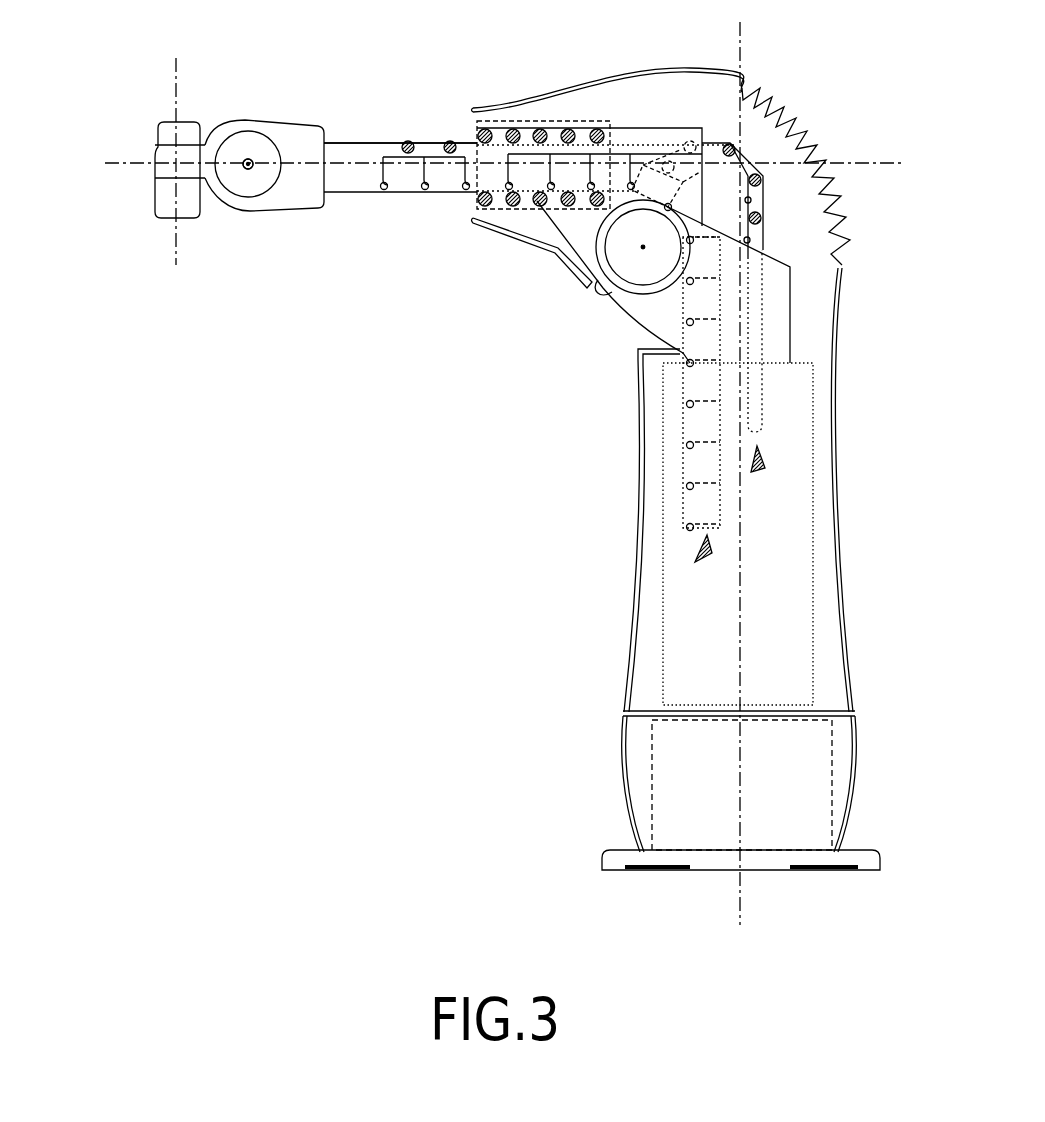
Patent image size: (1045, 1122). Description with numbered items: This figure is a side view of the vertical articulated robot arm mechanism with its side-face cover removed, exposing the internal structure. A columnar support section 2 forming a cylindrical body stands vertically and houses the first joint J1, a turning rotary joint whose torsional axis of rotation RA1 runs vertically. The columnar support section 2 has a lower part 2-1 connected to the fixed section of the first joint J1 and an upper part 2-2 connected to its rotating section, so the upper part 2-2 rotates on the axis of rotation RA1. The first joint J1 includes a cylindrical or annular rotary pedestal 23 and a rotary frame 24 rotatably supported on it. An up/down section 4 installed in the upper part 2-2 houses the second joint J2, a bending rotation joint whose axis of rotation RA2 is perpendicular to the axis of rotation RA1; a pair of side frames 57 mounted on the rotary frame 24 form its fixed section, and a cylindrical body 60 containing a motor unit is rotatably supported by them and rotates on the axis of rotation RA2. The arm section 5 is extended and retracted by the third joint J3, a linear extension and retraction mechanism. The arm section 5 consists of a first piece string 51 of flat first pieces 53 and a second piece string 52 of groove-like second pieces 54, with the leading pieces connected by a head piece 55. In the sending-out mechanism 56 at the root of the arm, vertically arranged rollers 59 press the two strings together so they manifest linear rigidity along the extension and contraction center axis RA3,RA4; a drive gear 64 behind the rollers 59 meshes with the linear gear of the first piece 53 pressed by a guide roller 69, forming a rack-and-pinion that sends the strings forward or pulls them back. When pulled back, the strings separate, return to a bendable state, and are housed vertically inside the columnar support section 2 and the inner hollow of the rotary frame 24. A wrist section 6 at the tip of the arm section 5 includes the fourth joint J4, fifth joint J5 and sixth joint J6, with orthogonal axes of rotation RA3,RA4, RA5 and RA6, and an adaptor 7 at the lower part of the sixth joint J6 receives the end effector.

The columnar support section 2 is at (853, 528).
The lower part 2-1 is at (627, 792).
The upper part 2-2 is at (635, 638).
The up/down section 4 is at (817, 122).
The arm section 5 is at (438, 137).
The wrist section 6 is at (267, 107).
The adaptor 7 is at (193, 214).
The rotary pedestal 23 is at (650, 722).
The rotary frame 24 is at (815, 620).
The first piece string 51 is at (760, 462).
The second piece string 52 is at (690, 560).
The first piece 53 is at (758, 412).
The second piece 54 is at (685, 500).
The head piece 55 is at (348, 195).
The sending-out mechanism 56 is at (547, 253).
The side frame 57 is at (636, 313).
The rollers 59 is at (492, 124).
The cylindrical body 60 is at (615, 291).
The drive gear 64 is at (663, 165).
The guide roller 69 is at (688, 150).
The first joint J1 is at (865, 717).
The second joint J2 is at (577, 284).
The third joint J3 is at (471, 201).
The fourth joint J4 is at (329, 135).
The fifth joint J5 is at (240, 199).
The sixth joint J6 is at (153, 225).
The axis of rotation RA1 is at (739, 462).
The axis of rotation RA2 is at (643, 247).
The extension and contraction center axis and fourth axis of rotation RA3,RA4 is at (466, 164).
The fifth axis of rotation RA5 is at (253, 171).
The sixth axis of rotation RA6 is at (177, 149).